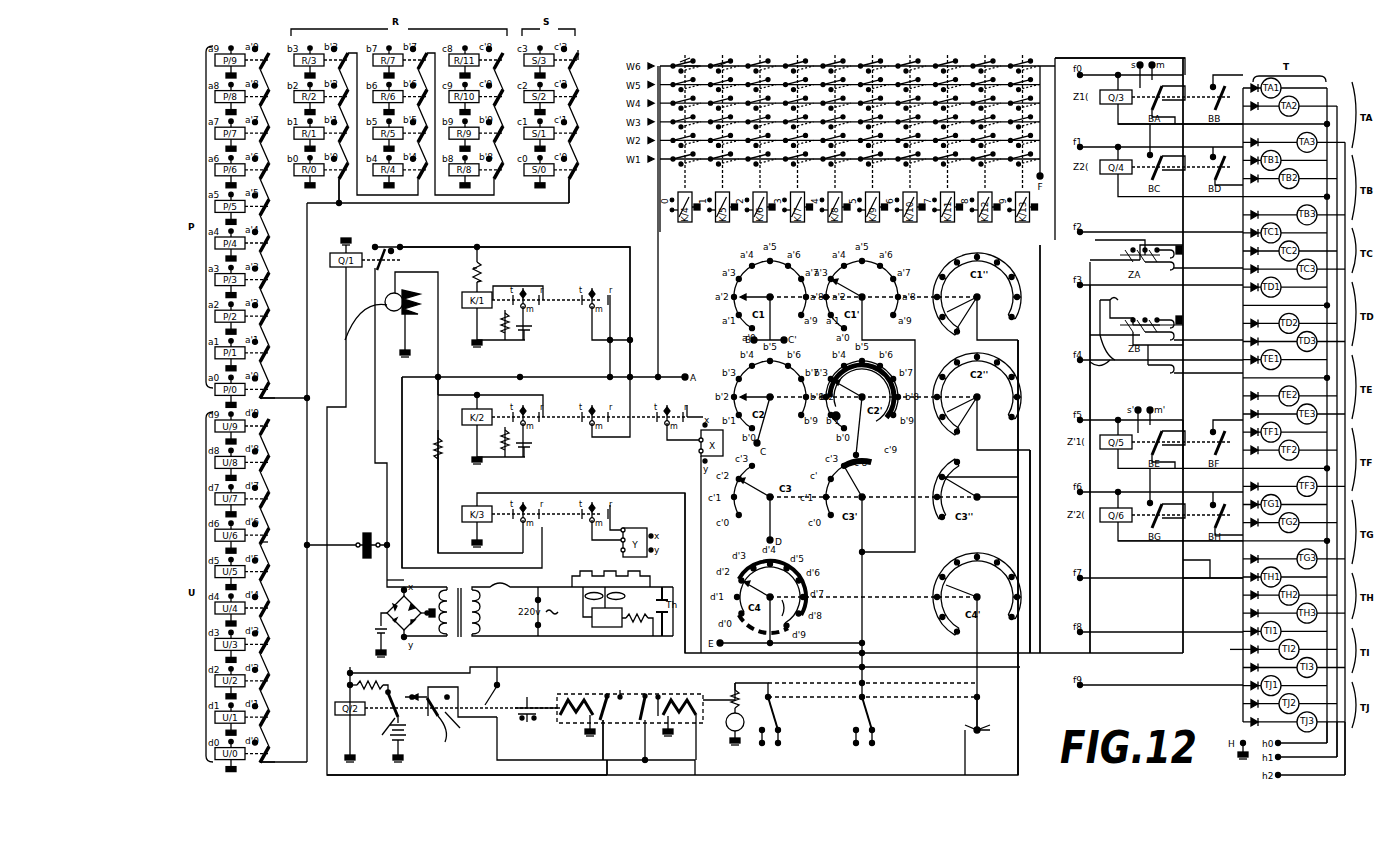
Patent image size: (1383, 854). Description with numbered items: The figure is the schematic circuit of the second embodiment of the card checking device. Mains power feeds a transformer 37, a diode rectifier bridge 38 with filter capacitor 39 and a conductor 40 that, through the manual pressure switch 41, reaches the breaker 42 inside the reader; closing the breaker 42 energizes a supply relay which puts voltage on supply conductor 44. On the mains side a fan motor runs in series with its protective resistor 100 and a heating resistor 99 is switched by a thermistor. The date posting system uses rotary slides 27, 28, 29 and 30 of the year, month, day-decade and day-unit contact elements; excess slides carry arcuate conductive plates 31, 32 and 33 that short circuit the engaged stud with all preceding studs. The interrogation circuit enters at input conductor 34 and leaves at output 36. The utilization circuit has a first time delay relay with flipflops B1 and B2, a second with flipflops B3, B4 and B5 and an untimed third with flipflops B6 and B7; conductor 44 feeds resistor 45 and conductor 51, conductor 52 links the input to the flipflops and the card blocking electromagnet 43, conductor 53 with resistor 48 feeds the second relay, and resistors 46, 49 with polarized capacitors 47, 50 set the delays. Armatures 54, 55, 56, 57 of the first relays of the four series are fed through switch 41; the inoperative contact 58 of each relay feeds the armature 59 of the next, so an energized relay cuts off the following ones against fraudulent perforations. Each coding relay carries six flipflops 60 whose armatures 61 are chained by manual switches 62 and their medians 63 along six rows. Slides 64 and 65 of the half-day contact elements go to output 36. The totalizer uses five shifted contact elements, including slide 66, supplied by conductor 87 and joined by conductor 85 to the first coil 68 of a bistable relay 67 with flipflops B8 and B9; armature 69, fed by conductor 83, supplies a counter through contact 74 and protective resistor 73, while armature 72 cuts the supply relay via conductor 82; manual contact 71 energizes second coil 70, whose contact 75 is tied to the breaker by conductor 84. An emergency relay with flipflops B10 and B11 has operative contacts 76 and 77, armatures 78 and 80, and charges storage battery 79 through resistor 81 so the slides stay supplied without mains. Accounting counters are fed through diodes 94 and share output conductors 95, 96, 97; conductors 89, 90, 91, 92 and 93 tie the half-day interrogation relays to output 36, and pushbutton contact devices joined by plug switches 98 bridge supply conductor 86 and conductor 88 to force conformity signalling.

The rotary slide 27 is at (765, 290).
The rotary slide 28 is at (765, 390).
The rotary slide 29 is at (760, 500).
The rotary slide 30 is at (772, 587).
The conductive plate 31 is at (862, 393).
The conductive plate 32 is at (872, 466).
The conductive plate 33 is at (778, 608).
The input conductor 34 is at (660, 300).
The output of the interrogation circuit 36 is at (640, 498).
The transformer 37 is at (485, 605).
The diode rectifier bridge 38 is at (412, 610).
The filter capacitor 39 is at (378, 634).
The conductor 40 is at (387, 588).
The manual pressure switch 41 is at (367, 533).
The breaker 42 is at (481, 700).
The electromagnet 43 is at (410, 312).
The supply conductor 44 is at (610, 245).
The resistor 45 is at (473, 270).
The resistor 46 is at (500, 335).
The polarized capacitor 47 is at (535, 327).
The resistor 48 is at (427, 453).
The resistor 49 is at (500, 450).
The polarized capacitor 50 is at (535, 445).
The conductor 51 is at (490, 269).
The conductor 52 is at (455, 375).
The conductor 53 is at (436, 515).
The switch arm 54 is at (270, 393).
The switch arm 55 is at (329, 191).
The switch arm 56 is at (583, 191).
The switch arm 57 is at (266, 758).
The inoperative contact 58 is at (266, 534).
The armature 59 is at (576, 62).
The bistable flipflops 60 is at (660, 160).
The armatures 61 is at (673, 62).
The manual switches 62 is at (685, 165).
The median 63 is at (720, 60).
The slide 64 is at (780, 710).
The slide 65 is at (875, 710).
The rotary slide 66 is at (980, 712).
The bistable relay 67 is at (616, 741).
The first coil 68 is at (676, 731).
The armature 69 is at (641, 721).
The second coil 70 is at (574, 724).
The manual contact element 71 is at (524, 735).
The armature 72 is at (589, 739).
The resistor 73 is at (745, 700).
The contact 74 is at (725, 685).
The contact 75 is at (605, 692).
The operative contact 76 is at (404, 684).
The operative contact 77 is at (447, 742).
The armature 78 is at (463, 728).
The storage battery 79 is at (384, 743).
The armature 80 is at (373, 735).
The protective resistor 81 is at (352, 675).
The conductor 82 is at (556, 748).
The conductor 83 is at (498, 745).
The conductor 84 is at (520, 690).
The conductor 85 is at (1012, 335).
The supply conductor 86 is at (1040, 255).
The conductor 87 is at (1035, 540).
The conductor 88 is at (1090, 398).
The conductor 89 is at (1200, 230).
The conductor 90 is at (1190, 145).
The conductor 91 is at (1185, 398).
The conductor 92 is at (1192, 478).
The connection line 93 is at (1218, 562).
The diode 94 is at (1240, 643).
The conductor 95 is at (1322, 745).
The conductor 96 is at (1332, 762).
The conductor 97 is at (1348, 760).
The plug switches 98 is at (1112, 358).
The heating resistor 99 is at (568, 578).
The protective resistor 100 is at (640, 630).
The flipflop B1 is at (514, 292).
The flipflop B2 is at (592, 292).
The flipflop B3 is at (515, 405).
The flipflop B4 is at (592, 410).
The flipflop B5 is at (667, 410).
The flipflop B6 is at (512, 505).
The flipflop B7 is at (585, 505).
The flipflop B8 is at (646, 695).
The flipflop B9 is at (606, 695).
The flipflop B10 is at (432, 722).
The flipflop B11 is at (436, 698).